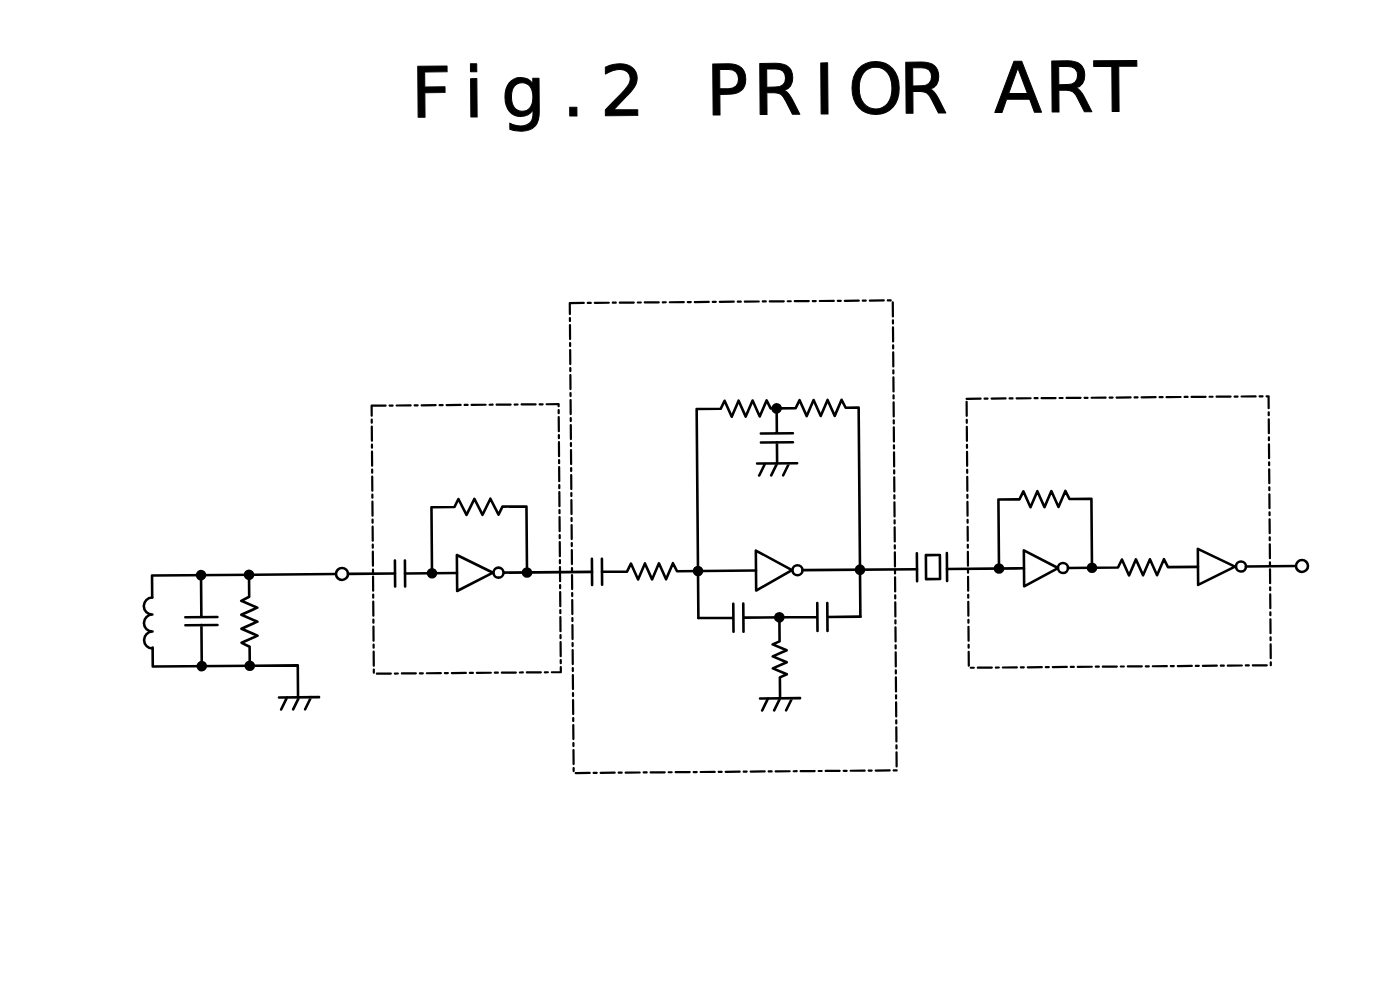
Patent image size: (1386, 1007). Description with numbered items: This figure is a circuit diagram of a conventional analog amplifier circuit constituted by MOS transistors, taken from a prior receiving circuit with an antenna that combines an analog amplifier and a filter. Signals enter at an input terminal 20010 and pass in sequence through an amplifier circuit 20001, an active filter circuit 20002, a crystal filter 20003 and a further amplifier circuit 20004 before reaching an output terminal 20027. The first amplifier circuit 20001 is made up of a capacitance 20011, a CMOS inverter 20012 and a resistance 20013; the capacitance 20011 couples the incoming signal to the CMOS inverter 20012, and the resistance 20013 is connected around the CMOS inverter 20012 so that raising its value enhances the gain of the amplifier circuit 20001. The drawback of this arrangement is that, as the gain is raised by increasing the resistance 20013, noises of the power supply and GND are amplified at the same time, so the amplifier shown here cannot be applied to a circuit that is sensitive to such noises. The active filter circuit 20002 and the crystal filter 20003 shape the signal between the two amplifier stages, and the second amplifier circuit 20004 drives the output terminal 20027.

The amplifier circuit 20001 is at (458, 402).
The active filter circuit 20002 is at (756, 301).
The crystal filter 20003 is at (932, 582).
The amplifier circuit 20004 is at (1152, 400).
The input terminal 20010 is at (342, 564).
The capacitance 20011 is at (400, 586).
The CMOS inverter 20012 is at (480, 592).
The resistance 20013 is at (467, 490).
The output terminal 20027 is at (1302, 564).